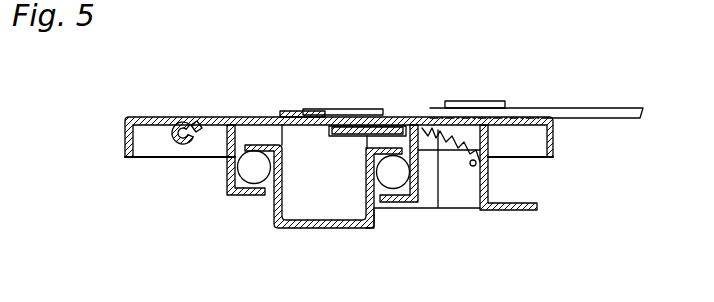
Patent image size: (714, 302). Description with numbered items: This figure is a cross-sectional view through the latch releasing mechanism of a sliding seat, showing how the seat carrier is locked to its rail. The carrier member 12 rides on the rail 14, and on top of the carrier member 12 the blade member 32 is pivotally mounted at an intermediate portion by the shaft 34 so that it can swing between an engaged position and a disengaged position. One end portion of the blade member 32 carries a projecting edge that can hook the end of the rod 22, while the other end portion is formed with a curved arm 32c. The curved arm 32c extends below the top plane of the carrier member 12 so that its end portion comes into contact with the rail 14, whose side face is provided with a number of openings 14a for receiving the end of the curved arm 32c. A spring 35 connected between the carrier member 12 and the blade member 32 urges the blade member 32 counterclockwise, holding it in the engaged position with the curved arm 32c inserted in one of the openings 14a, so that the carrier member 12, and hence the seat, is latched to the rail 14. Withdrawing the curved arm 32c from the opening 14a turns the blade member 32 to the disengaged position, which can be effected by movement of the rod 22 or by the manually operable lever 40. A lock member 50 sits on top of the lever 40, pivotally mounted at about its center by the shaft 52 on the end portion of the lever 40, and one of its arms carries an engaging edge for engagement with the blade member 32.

The carrier member 12 is at (224, 167).
The rail 14 is at (275, 218).
The openings 14a is at (371, 229).
The rod 22 is at (183, 120).
The blade member 32 is at (248, 117).
The curved arm 32c is at (413, 203).
The shaft 34 is at (345, 109).
The spring 35 is at (433, 137).
The manually operable lever 40 is at (537, 145).
The lock member 50 is at (602, 108).
The shaft 52 is at (482, 101).